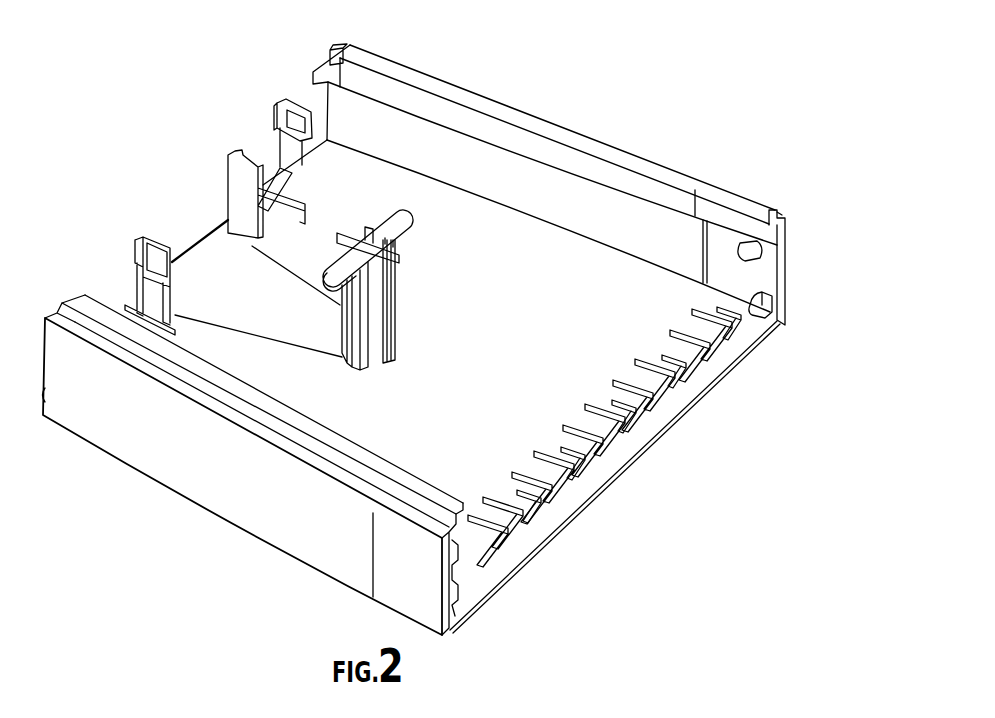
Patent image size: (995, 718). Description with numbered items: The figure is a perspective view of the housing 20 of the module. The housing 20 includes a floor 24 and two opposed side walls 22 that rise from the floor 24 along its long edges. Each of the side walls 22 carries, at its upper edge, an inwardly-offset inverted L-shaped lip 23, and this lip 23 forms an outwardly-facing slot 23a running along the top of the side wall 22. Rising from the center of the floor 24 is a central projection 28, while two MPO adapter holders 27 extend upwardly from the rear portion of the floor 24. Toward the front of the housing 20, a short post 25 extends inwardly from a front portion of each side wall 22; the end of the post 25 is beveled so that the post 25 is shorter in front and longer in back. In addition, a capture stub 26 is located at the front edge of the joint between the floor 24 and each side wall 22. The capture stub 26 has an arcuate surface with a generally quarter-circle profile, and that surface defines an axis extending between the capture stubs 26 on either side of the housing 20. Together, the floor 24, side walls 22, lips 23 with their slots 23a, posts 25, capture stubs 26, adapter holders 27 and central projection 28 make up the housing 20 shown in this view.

The housing 20 is at (682, 90).
The side wall 22 is at (408, 582).
The inverted L-shaped lip 23 is at (753, 228).
The outwardly-facing slot 23a is at (784, 215).
The floor 24 is at (513, 434).
The post 25 is at (753, 255).
The capture stub 26 is at (765, 304).
The MPO adapter holder 27 is at (237, 181).
The central projection 28 is at (412, 221).